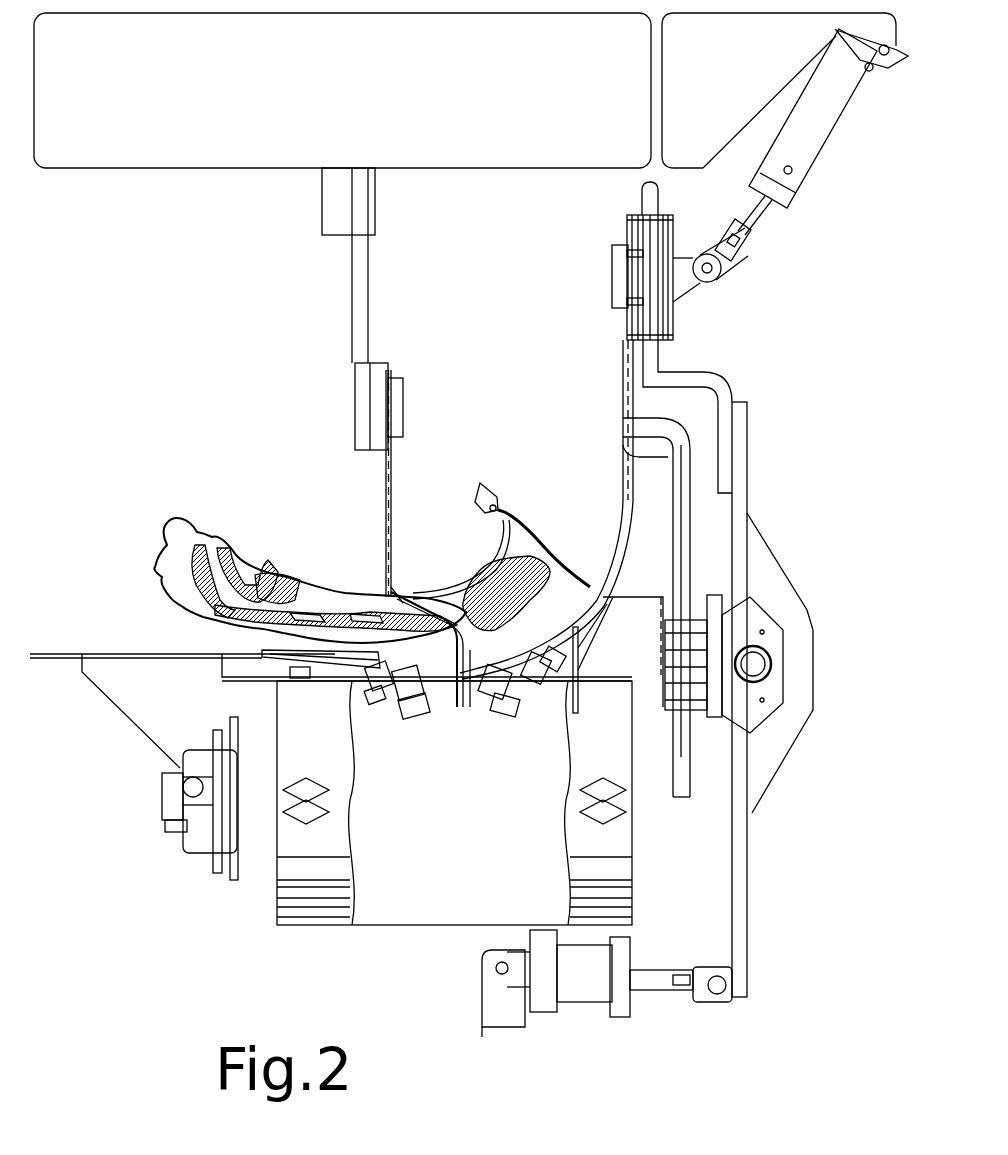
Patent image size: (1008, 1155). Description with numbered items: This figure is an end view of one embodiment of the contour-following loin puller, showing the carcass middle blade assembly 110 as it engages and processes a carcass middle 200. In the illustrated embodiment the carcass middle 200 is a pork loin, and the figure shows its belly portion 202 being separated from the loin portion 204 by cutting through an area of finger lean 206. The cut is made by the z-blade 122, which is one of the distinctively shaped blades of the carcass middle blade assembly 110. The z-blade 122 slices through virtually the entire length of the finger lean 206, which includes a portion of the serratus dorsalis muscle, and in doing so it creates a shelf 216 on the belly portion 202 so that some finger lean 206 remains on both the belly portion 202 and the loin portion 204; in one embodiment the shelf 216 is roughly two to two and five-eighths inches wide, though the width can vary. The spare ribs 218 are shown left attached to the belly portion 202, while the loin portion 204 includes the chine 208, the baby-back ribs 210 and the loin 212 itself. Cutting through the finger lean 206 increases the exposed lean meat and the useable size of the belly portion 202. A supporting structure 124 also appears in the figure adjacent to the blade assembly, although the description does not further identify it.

The carcass middle blade assembly 110 is at (590, 282).
The z-blade 122 is at (384, 503).
The rail and pipe assembly 124 is at (563, 587).
The carcass middle 200 is at (122, 571).
The belly portion 202 is at (288, 578).
The loin portion 204 is at (563, 587).
The finger lean 206 is at (425, 590).
The chine 208 is at (488, 490).
The baby-back ribs 210 is at (467, 577).
The loin 212 is at (545, 495).
The shelf 216 is at (412, 606).
The spare ribs 218 is at (323, 593).